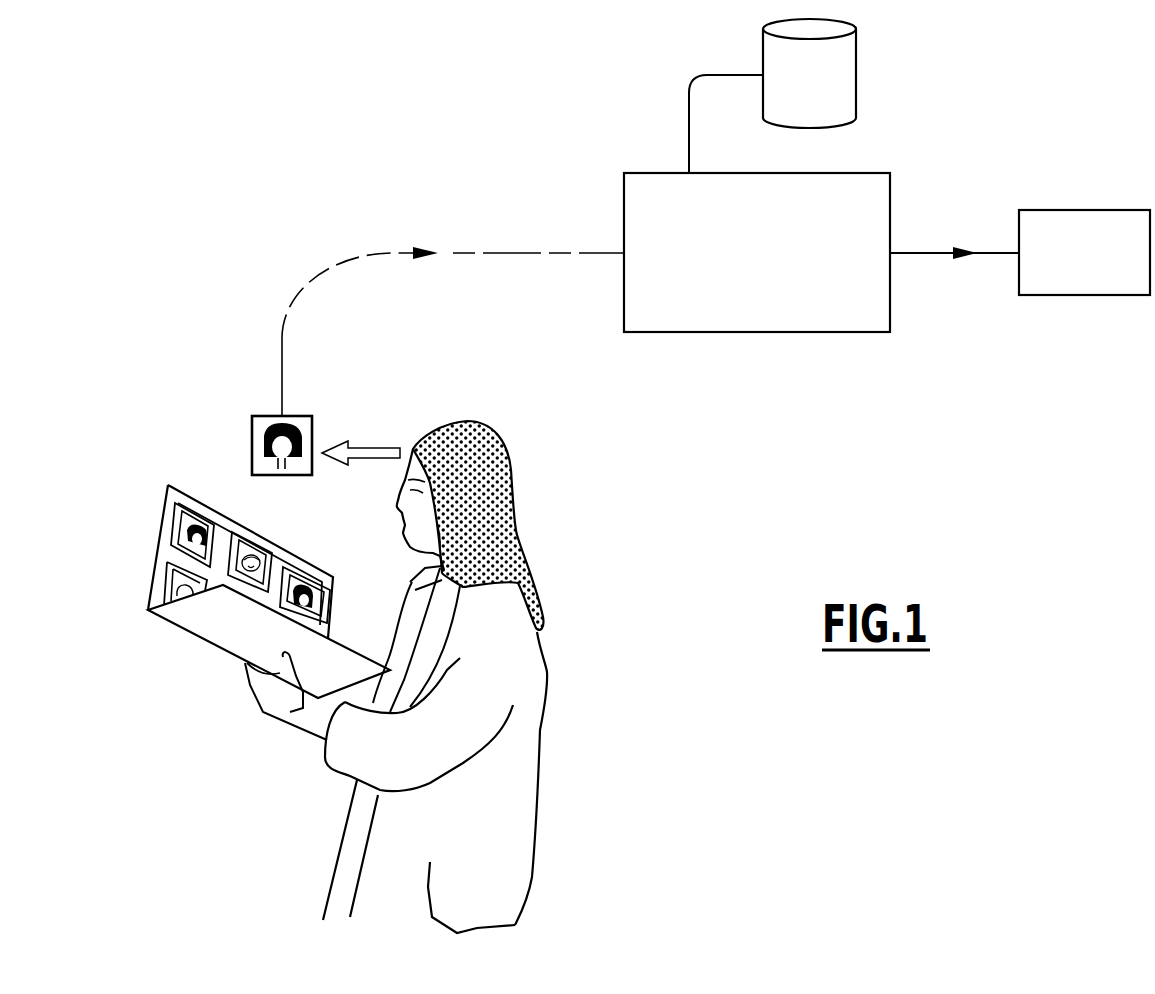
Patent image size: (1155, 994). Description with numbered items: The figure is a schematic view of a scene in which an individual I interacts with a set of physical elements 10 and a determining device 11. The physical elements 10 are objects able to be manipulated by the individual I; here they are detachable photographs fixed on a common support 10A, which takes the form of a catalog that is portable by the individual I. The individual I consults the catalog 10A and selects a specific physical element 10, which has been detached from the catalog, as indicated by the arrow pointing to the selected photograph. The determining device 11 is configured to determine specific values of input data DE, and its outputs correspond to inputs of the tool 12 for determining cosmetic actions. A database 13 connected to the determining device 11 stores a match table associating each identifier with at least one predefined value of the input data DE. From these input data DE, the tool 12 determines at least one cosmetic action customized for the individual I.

The physical element 10 is at (170, 560).
The support 10A is at (177, 608).
The determining device 11 is at (771, 264).
The tool for determining cosmetic actions 12 is at (1096, 270).
The database 13 is at (822, 96).
The input data DE is at (954, 232).
The individual I is at (518, 677).